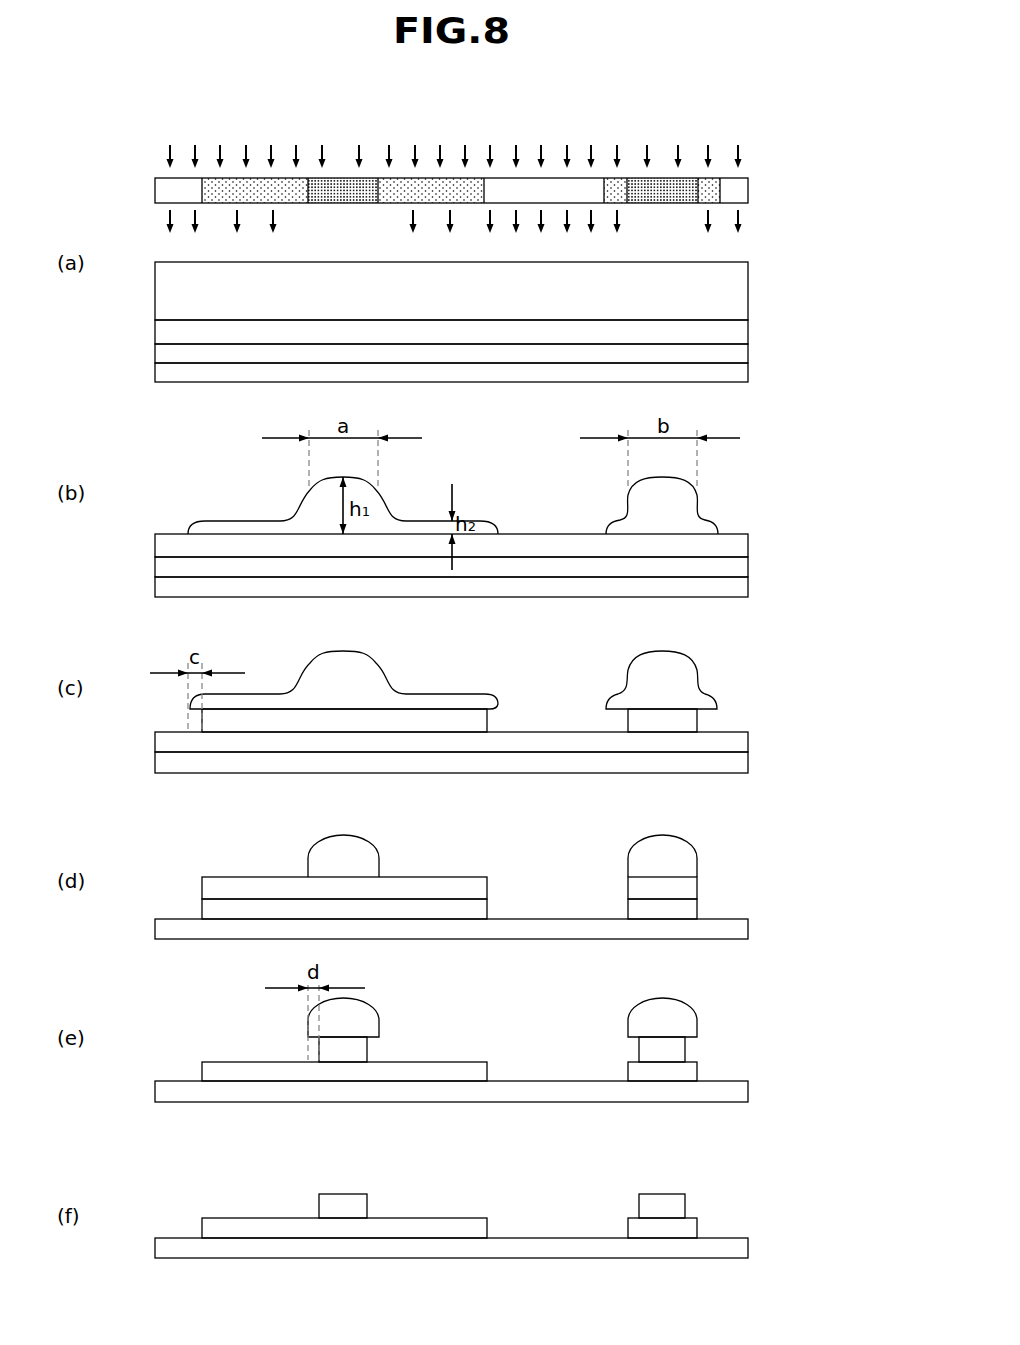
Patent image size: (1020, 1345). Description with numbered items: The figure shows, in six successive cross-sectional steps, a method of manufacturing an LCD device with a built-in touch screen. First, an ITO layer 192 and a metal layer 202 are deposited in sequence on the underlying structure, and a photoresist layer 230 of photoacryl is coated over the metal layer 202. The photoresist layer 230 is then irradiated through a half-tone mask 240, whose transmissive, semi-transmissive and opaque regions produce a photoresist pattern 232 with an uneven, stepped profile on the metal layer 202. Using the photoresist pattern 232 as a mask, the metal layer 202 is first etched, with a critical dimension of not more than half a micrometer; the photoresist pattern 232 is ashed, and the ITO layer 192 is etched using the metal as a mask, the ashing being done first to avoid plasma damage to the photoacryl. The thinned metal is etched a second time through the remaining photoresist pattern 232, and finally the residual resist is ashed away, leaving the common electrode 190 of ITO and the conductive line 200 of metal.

The half-tone mask 240 is at (742, 190).
The photoresist layer 230 is at (740, 298).
The metal layer 202 is at (740, 330).
The ITO layer 192 is at (740, 355).
The photoresist pattern 232 is at (688, 503).
The conductive line 200 is at (665, 1194).
The common electrode 190 is at (690, 1227).